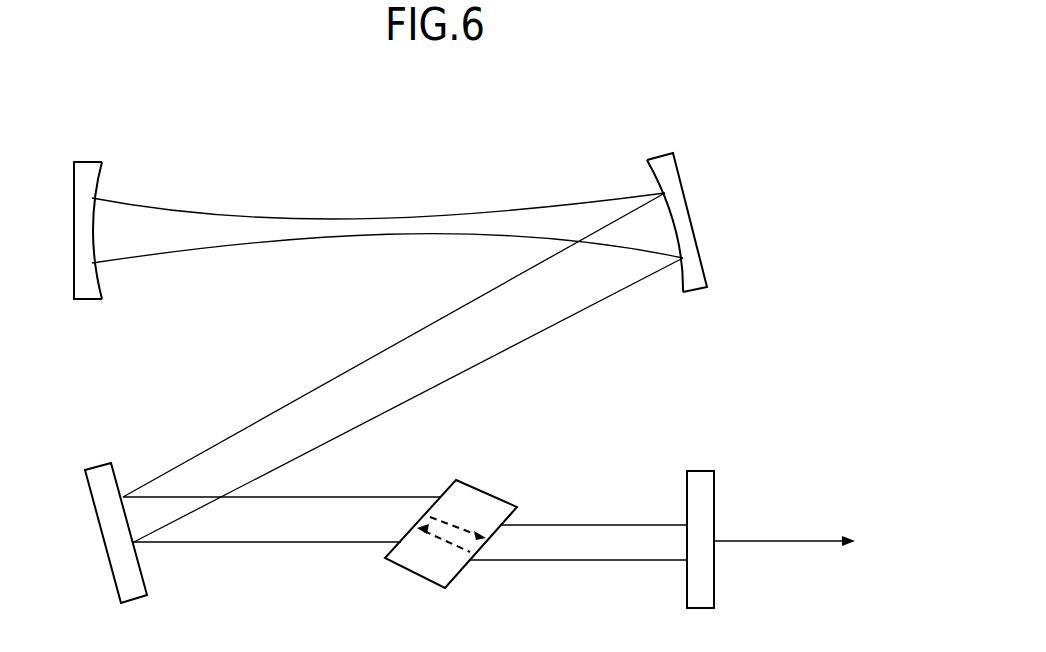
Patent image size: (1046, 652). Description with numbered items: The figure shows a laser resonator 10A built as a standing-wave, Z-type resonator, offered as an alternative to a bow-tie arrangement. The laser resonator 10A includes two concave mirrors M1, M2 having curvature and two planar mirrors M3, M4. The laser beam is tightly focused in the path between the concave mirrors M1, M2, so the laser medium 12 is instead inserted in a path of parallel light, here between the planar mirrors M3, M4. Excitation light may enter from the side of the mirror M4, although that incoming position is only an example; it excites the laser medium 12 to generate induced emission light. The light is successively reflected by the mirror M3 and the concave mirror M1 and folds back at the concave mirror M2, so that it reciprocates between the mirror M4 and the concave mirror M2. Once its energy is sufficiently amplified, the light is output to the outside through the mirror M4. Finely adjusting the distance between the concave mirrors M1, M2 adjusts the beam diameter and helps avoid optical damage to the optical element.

The laser resonator 10A is at (417, 121).
The concave mirror M1 is at (697, 292).
The concave mirror M2 is at (88, 300).
The planar mirror M3 is at (96, 466).
The planar mirror M4 is at (700, 470).
The laser medium 12 is at (452, 482).